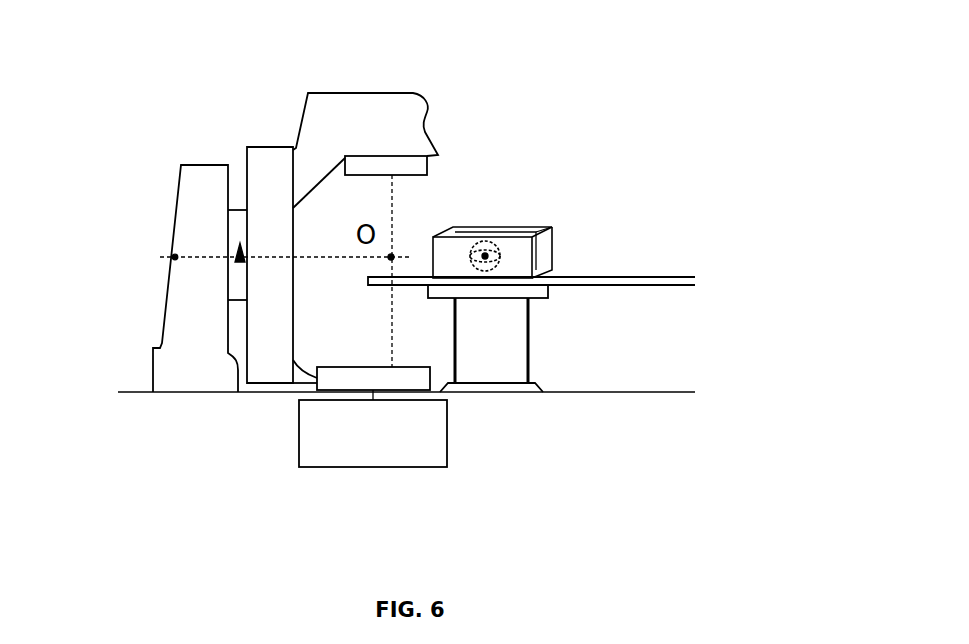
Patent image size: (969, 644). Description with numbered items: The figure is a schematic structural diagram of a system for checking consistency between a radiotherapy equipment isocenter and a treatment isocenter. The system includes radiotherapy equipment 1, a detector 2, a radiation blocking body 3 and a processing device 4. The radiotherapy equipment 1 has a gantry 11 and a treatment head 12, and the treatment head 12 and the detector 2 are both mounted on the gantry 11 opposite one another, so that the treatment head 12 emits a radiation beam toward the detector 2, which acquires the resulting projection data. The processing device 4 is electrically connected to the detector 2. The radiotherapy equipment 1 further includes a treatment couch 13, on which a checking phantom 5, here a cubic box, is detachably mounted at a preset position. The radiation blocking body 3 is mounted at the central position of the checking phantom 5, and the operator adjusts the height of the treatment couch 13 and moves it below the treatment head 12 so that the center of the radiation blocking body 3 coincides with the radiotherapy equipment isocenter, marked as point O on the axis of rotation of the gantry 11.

The radiotherapy equipment 1 is at (313, 221).
The gantry 11 is at (170, 255).
The treatment head 12 is at (413, 135).
The detector 2 is at (432, 382).
The radiation blocking body 3 is at (487, 254).
The processing device 4 is at (432, 437).
The checking phantom 5 is at (542, 255).
The treatment couch 13 is at (590, 275).